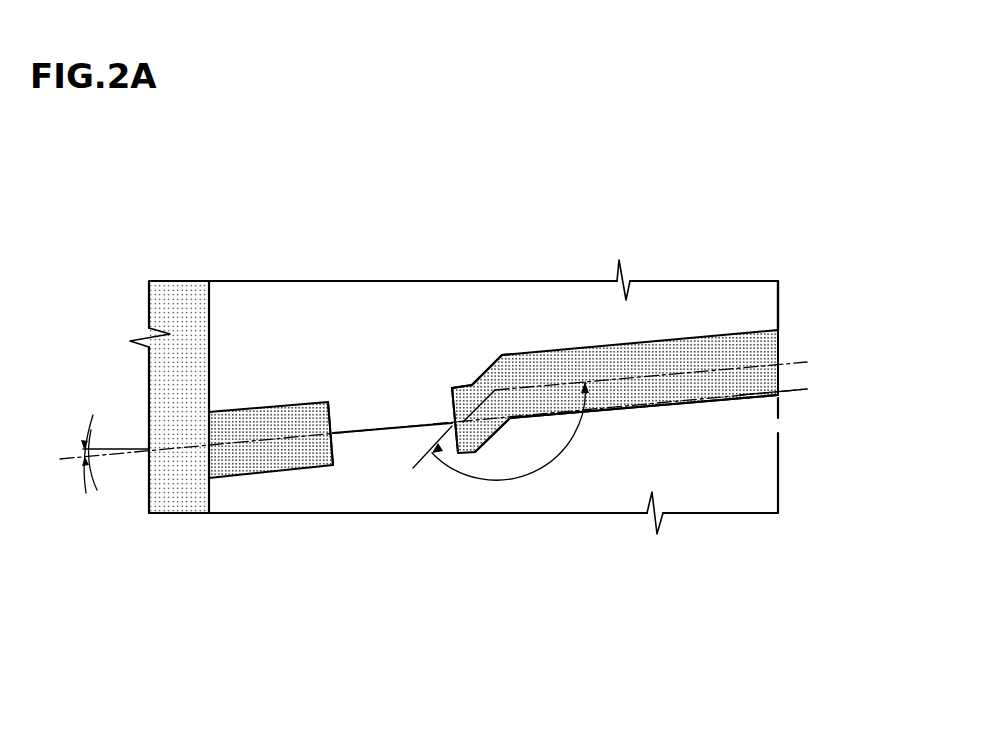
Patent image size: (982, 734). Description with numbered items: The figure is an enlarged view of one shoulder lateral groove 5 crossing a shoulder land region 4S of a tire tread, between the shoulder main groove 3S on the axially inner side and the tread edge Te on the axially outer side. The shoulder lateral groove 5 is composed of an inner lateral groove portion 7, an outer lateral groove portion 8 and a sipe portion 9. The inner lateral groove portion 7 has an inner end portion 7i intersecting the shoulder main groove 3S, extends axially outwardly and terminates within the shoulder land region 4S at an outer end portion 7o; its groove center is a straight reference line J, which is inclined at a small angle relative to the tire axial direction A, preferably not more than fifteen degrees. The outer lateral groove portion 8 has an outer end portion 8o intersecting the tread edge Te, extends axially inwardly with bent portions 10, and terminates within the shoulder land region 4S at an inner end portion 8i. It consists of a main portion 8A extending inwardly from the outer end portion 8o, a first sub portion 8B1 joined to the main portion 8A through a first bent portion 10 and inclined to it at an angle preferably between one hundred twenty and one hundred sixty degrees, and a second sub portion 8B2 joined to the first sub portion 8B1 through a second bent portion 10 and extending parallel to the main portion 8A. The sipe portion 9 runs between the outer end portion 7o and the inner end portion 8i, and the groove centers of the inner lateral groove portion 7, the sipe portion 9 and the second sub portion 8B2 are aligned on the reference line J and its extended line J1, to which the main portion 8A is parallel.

The shoulder lateral groove 5 is at (550, 183).
The inner lateral groove portion 7 is at (268, 403).
The inner end portion 7i is at (203, 430).
The outer end portion 7o is at (332, 473).
The sipe portion 9 is at (393, 425).
The outer lateral groove portion 8 is at (602, 345).
The inner end portion 8i is at (447, 386).
The outer end portion 8o is at (781, 344).
The main portion 8A is at (692, 405).
The first sub portion 8B1 is at (493, 437).
The second sub portion 8B2 is at (463, 455).
The bent portion 10 is at (469, 379).
The shoulder land region 4S is at (690, 308).
The shoulder main groove 3S is at (178, 493).
The tread edge Te is at (778, 303).
The reference line J is at (232, 445).
The extended line J1 is at (793, 391).
The reference axis line A is at (435, 413).